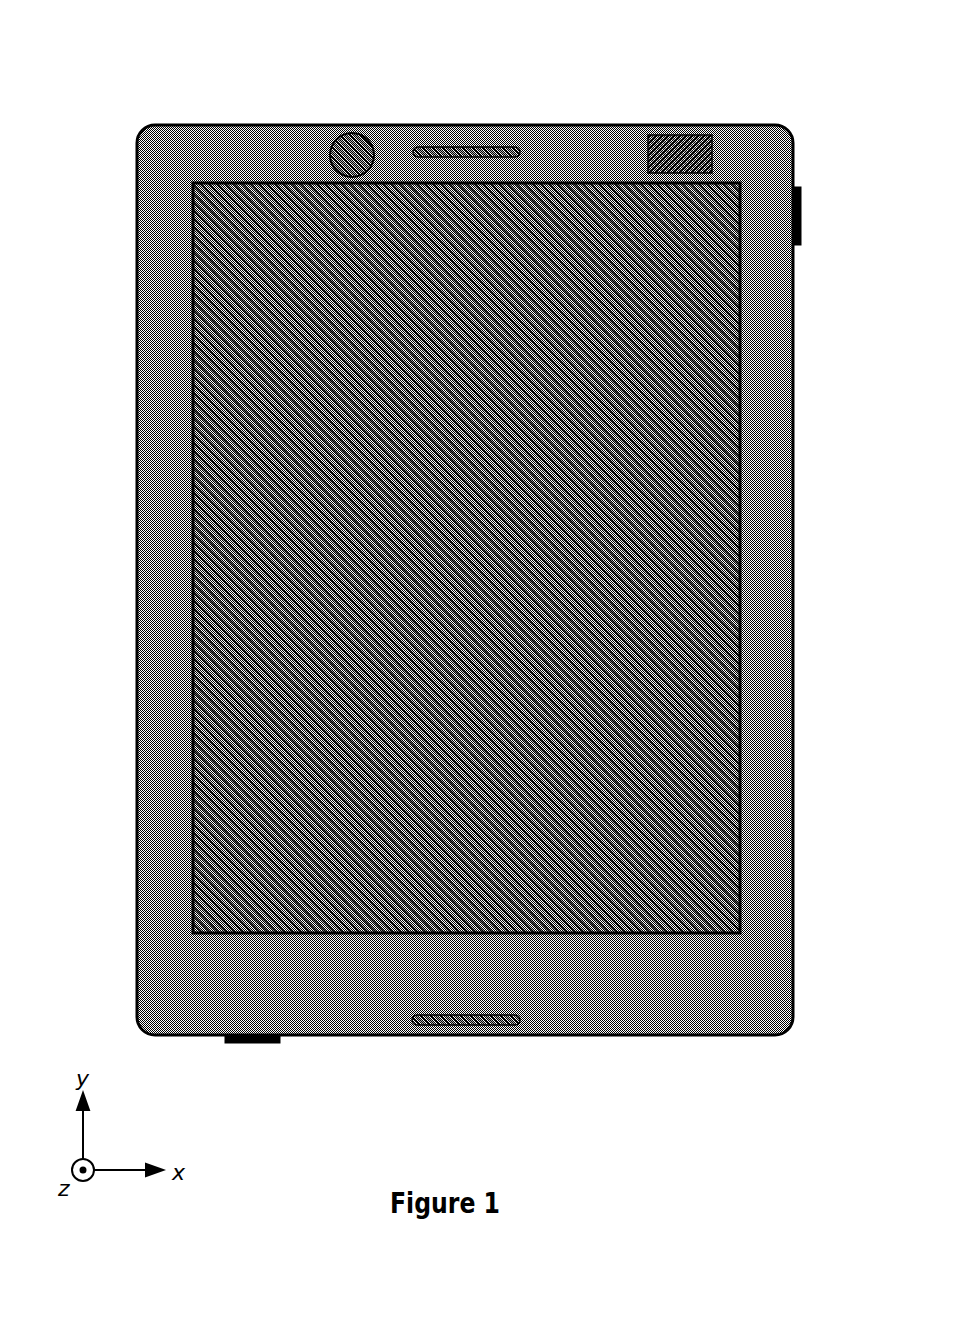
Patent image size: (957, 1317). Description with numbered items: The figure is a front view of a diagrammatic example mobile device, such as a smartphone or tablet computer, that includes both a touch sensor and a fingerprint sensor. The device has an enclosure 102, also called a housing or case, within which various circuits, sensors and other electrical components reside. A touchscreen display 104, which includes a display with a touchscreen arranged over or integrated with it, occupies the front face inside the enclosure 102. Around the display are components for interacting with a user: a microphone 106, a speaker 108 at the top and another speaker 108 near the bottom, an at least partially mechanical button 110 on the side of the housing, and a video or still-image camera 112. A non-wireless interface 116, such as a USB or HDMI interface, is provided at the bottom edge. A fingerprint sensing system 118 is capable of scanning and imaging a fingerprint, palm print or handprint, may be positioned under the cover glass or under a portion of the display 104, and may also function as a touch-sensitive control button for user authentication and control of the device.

The enclosure 102 is at (137, 323).
The touchscreen display 104 is at (218, 448).
The microphone 106 is at (711, 143).
The speaker 108 is at (513, 143).
The mechanical button 110 is at (299, 72).
The camera 112 is at (371, 141).
The non-wireless interface 116 is at (247, 1044).
The fingerprint sensing system 118 is at (250, 843).